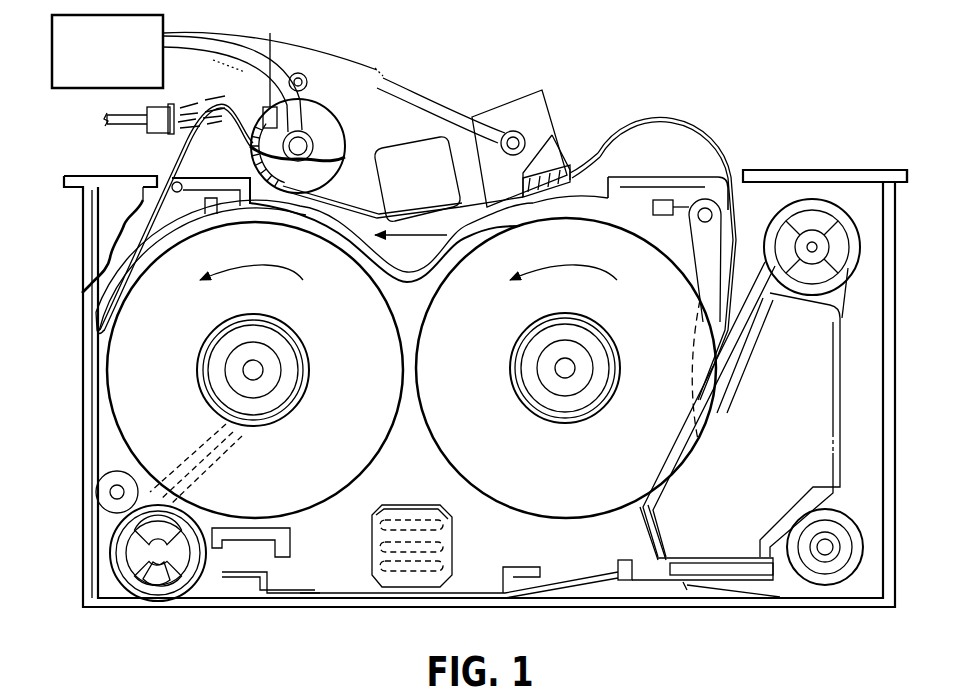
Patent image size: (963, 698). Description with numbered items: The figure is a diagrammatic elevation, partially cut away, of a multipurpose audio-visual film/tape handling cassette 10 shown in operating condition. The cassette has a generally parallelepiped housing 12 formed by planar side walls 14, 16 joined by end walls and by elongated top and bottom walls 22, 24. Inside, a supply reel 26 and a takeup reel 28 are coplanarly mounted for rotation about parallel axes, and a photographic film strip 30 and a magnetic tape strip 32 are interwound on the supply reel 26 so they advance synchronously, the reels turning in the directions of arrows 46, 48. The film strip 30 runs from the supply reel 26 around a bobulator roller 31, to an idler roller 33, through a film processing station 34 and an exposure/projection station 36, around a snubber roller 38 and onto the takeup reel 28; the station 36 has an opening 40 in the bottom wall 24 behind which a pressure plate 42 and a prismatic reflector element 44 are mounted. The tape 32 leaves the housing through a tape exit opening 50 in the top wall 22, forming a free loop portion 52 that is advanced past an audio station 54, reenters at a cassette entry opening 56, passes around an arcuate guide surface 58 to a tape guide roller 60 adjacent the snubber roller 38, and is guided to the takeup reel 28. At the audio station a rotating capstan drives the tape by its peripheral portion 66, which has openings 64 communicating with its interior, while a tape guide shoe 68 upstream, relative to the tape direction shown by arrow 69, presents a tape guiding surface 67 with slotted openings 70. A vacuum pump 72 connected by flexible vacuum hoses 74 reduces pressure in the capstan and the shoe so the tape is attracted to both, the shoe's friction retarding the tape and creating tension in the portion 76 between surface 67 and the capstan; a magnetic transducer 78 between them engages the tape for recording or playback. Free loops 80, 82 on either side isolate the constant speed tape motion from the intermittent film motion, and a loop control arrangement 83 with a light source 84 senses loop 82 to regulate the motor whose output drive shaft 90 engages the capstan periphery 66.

The multipurpose audio-visual film/tape handling cassette 10 is at (78, 445).
The casing or housing 12 is at (770, 193).
The side wall 14 is at (98, 200).
The side wall 16 is at (418, 473).
The top wall 22 is at (837, 170).
The bottom wall 24 is at (675, 605).
The supply spool or reel 26 is at (597, 461).
The takeup spool or reel 28 is at (272, 466).
The photographic film strip or web 30 is at (580, 597).
The bobulator roller 31 is at (850, 238).
The magnetic tape strip 32 is at (128, 250).
The idler roller 33 is at (822, 575).
The film processing station 34 is at (642, 535).
The exposure/projection station 36 is at (457, 547).
The snubber roller 38 is at (160, 580).
The opening 40 is at (375, 600).
The pressure plate 42 is at (318, 595).
The prismatic reflector element 44 is at (372, 538).
The arrow 46 is at (586, 262).
The arrow 48 is at (270, 268).
The tape exit opening 50 is at (740, 167).
The free loop portion 52 is at (580, 147).
The audio station 54 is at (385, 138).
The cassette entry opening 56 is at (117, 135).
The arcuate guide surface 58 is at (120, 283).
The tape guide roller 60 is at (310, 100).
The openings 64 is at (310, 190).
The peripheral portion 66 is at (368, 139).
The tape guiding surface 67 is at (543, 187).
The tape guide shoe 68 is at (500, 100).
The arrow 69 is at (423, 237).
The slotted openings 70 is at (585, 167).
The vacuum source or pump 72 is at (52, 38).
The flexible vacuum hoses 74 is at (187, 33).
The portion of the recording tape 76 is at (453, 220).
The magnetic transducer 78 is at (402, 184).
The free loop of magnetic tape 80 is at (673, 120).
The free loop of magnetic tape 82 is at (220, 134).
The loop control arrangement 83 is at (212, 100).
The light source 84 is at (129, 110).
The motor output drive shaft 90 is at (300, 73).